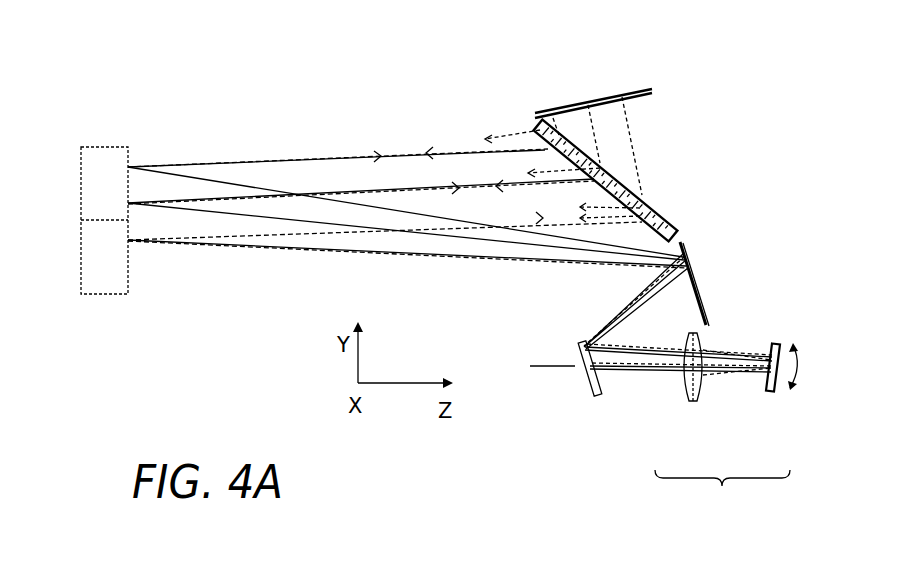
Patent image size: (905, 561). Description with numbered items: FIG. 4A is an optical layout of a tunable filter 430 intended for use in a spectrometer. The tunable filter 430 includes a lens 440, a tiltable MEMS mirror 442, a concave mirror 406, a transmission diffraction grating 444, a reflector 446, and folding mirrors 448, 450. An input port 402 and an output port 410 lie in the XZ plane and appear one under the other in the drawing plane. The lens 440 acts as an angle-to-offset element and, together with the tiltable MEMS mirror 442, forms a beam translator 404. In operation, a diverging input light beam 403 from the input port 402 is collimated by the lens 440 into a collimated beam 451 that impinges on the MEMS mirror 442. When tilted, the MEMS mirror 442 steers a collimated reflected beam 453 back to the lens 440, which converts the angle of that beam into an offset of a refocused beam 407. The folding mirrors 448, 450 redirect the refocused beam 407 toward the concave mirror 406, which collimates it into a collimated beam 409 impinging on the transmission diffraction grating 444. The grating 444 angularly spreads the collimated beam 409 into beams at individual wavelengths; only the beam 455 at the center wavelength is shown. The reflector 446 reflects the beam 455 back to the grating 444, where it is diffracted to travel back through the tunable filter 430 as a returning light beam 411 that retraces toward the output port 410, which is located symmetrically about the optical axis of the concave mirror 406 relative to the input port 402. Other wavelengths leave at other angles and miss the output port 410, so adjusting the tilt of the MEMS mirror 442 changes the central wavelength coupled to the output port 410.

The tunable filter 430 is at (180, 81).
The concave mirror 406 is at (100, 294).
The collimated beam 409 is at (365, 160).
The returning light beam 411 is at (443, 160).
The refocused beam 407 is at (662, 302).
The reflector 446 is at (651, 90).
The beam at center wavelength 455 is at (623, 147).
The transmission diffraction grating 444 is at (670, 223).
The folding mirror 450 is at (692, 278).
The folding mirror 448 is at (597, 400).
The input port 402 is at (578, 364).
The output port 410 is at (578, 366).
The input light beam 403 is at (648, 375).
The lens 440 is at (697, 403).
The collimated beam 451 is at (730, 368).
The tiltable MEMS mirror 442 is at (763, 390).
The collimated reflected beam 453 is at (737, 350).
The beam translator 404 is at (722, 499).